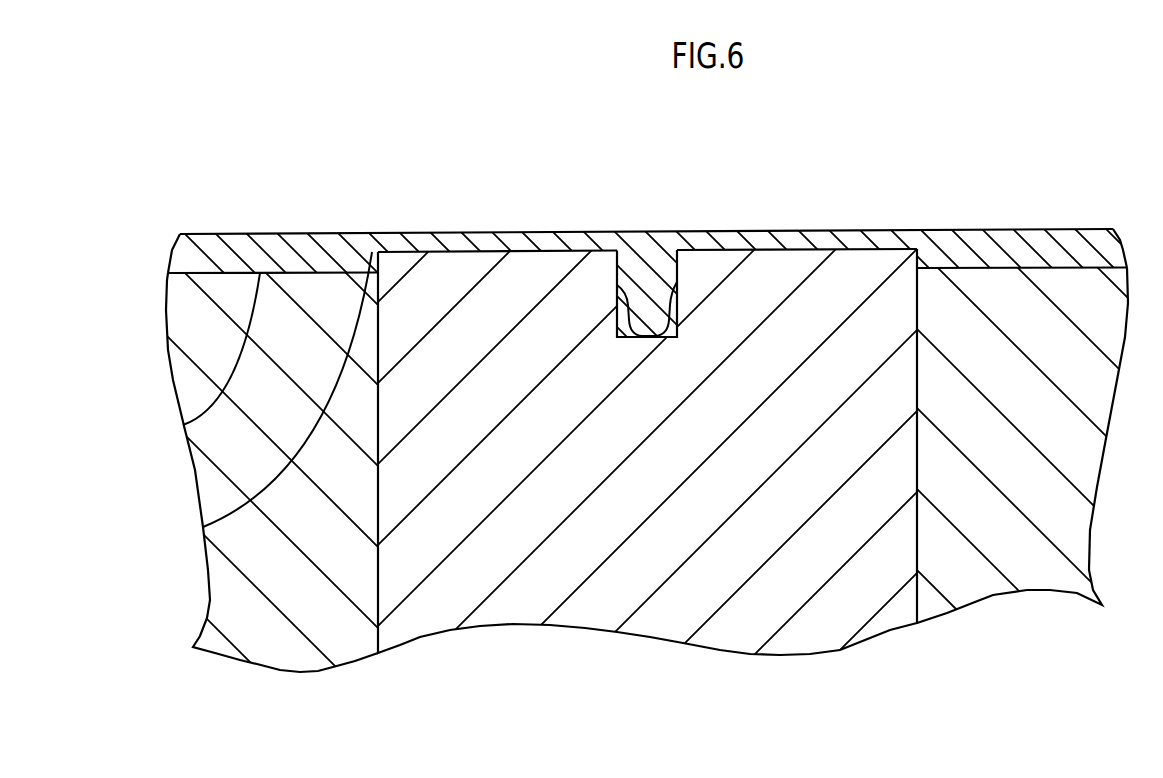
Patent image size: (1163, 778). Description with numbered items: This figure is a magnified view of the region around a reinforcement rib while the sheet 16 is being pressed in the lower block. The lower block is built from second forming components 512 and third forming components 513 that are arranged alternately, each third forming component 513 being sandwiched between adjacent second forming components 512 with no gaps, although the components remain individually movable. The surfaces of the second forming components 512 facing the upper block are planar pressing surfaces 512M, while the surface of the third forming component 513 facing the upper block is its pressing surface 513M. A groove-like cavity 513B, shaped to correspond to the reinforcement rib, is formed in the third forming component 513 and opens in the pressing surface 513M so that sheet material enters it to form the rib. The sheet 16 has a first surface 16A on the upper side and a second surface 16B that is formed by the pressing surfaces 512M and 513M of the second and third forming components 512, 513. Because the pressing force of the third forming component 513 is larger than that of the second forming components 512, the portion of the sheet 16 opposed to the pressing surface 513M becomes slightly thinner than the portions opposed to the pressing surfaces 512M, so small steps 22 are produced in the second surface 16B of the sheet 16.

The sheet 16 is at (220, 251).
The first surface 16A is at (447, 231).
The second surface 16B is at (183, 425).
The small step 22 is at (205, 526).
The second forming component 512 is at (298, 653).
The pressing surface 512M is at (339, 271).
The third forming component 513 is at (653, 614).
The cavity 513B is at (671, 313).
The pressing surface 513M is at (861, 248).